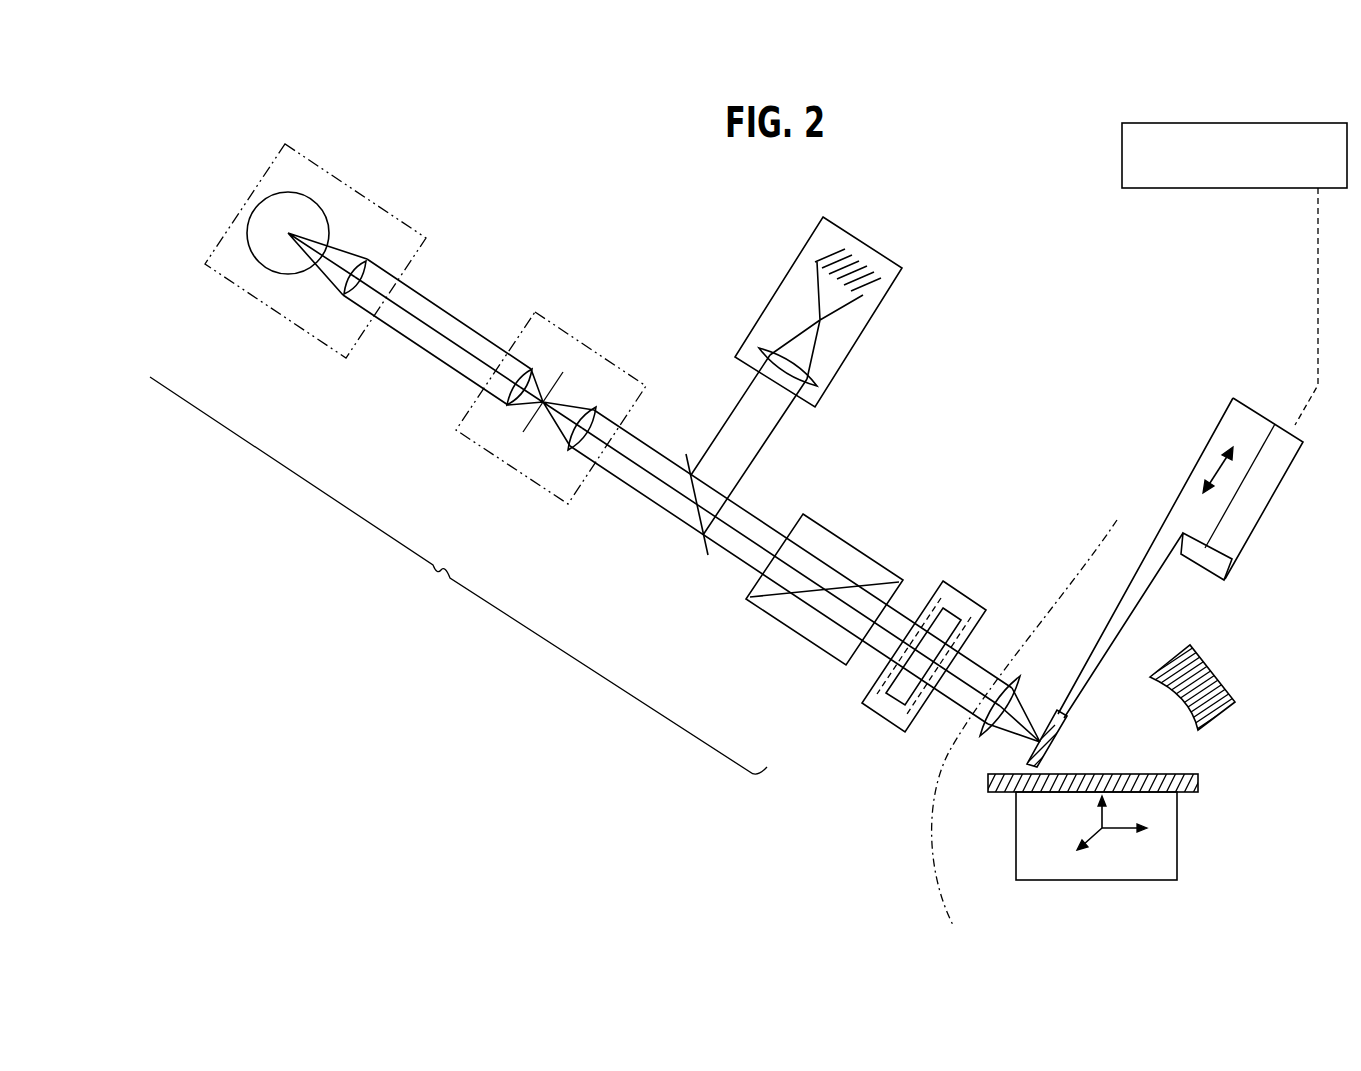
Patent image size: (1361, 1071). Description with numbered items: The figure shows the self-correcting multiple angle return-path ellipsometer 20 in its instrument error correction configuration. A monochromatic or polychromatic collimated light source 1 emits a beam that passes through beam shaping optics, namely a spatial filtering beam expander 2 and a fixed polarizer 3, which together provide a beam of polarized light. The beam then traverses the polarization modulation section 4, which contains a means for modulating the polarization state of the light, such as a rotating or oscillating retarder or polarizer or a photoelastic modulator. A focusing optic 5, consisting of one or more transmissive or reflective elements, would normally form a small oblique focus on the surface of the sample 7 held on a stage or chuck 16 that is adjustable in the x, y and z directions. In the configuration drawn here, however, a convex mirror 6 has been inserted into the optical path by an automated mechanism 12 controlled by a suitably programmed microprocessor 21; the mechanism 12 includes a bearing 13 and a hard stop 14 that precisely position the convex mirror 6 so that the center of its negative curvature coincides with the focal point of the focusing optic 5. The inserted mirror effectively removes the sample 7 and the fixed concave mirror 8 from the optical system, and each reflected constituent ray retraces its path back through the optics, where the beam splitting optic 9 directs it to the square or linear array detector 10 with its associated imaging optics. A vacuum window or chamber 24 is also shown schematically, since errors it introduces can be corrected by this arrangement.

The collimated light source 1 is at (343, 187).
The spatial filtering beam expander 2 is at (553, 327).
The fixed polarizer 3 is at (840, 533).
The polarization modulation section 4 is at (963, 593).
The focusing optic 5 is at (1017, 673).
The convex mirror 6 is at (1025, 757).
The sample 7 is at (988, 786).
The concave mirror 8 is at (1208, 668).
The beam splitting optic 9 is at (708, 553).
The array detector 10 is at (853, 235).
The automated mechanism 12 is at (1207, 437).
The bearing 13 is at (1272, 502).
The hard stop 14 is at (1205, 572).
The stage or chuck 16 is at (1016, 828).
The ellipsometer 20 is at (458, 575).
The microprocessor 21 is at (1178, 188).
The vacuum window/chamber 24 is at (940, 727).